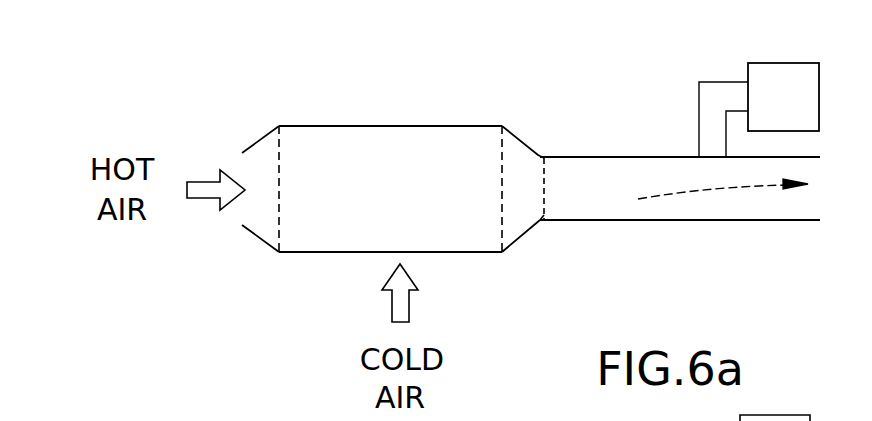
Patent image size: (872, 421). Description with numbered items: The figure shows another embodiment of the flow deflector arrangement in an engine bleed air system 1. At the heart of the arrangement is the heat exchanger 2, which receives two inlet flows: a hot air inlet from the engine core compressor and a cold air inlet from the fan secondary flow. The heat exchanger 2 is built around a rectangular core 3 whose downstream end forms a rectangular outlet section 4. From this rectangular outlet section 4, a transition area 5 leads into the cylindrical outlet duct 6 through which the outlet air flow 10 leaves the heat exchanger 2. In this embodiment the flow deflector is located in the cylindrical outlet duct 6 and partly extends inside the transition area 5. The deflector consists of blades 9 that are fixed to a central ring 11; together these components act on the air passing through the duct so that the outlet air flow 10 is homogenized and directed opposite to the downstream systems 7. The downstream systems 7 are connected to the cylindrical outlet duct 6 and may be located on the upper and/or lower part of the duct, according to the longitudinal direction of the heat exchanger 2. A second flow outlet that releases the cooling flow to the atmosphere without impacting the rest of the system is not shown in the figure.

The engine bleed air system 1 is at (246, 301).
The heat exchanger 2 is at (290, 96).
The rectangular core 3 is at (377, 135).
The rectangular outlet section 4 is at (505, 130).
The transition area 5 is at (525, 130).
The cylindrical outlet duct 6 is at (670, 220).
The downstream systems 7 is at (810, 83).
The blades 9 is at (547, 165).
The outlet air flow 10 is at (700, 192).
The central ring 11 is at (548, 200).